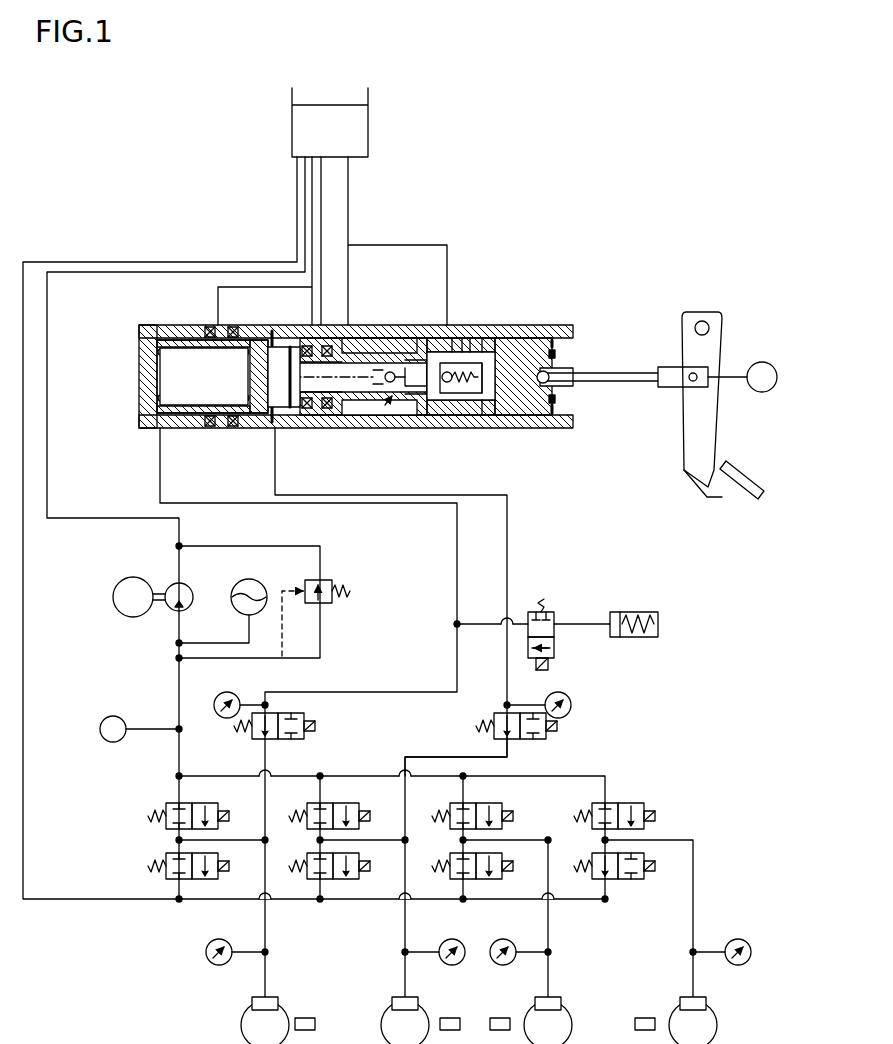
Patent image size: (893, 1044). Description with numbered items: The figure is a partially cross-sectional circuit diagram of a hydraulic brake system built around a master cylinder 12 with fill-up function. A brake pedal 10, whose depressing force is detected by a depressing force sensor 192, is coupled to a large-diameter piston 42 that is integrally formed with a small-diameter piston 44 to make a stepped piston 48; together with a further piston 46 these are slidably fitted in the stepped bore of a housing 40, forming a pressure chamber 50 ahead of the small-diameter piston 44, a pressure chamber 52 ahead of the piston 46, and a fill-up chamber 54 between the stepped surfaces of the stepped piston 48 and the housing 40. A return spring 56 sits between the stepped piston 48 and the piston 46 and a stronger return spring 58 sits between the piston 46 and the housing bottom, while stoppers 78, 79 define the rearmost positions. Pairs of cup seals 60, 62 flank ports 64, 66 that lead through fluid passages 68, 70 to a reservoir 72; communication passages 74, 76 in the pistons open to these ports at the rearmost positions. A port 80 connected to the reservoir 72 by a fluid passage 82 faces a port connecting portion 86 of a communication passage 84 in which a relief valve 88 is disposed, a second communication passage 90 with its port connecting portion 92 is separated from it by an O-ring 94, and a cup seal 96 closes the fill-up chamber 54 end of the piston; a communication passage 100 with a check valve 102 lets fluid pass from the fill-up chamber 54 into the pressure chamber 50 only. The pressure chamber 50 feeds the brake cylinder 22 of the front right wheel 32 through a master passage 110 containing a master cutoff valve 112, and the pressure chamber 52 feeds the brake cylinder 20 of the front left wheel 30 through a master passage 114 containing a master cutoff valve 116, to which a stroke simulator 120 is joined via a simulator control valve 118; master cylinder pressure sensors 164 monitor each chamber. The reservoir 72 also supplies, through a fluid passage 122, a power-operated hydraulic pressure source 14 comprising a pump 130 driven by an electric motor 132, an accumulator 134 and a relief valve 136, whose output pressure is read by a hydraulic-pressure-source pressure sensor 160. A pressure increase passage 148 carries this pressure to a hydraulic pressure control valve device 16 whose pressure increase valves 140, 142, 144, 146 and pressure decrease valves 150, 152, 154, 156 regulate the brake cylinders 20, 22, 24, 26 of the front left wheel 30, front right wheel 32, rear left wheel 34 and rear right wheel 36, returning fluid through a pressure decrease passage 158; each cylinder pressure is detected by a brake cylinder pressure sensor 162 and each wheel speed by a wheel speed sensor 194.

The brake pedal 10 is at (723, 345).
The master cylinder 12 is at (552, 230).
The power-operated hydraulic pressure source 14 is at (170, 656).
The hydraulic pressure control valve device 16 is at (638, 772).
The brake cylinder 20 is at (258, 997).
The brake cylinder 22 is at (400, 997).
The brake cylinder 24 is at (554, 998).
The brake cylinder 26 is at (699, 998).
The front left wheel 30 is at (222, 1008).
The front right wheel 32 is at (372, 1008).
The rear left wheel 34 is at (582, 1006).
The rear right wheel 36 is at (728, 1006).
The housing 40 is at (560, 428).
The large-diameter piston 42 is at (552, 396).
The small-diameter piston 44 is at (480, 396).
The piston 46 is at (206, 333).
The stepped piston 48 is at (388, 416).
The pressure chamber 50 is at (300, 417).
The pressure chamber 52 is at (152, 408).
The fill-up chamber 54 is at (366, 334).
The return spring 56 is at (291, 410).
The return spring 58 is at (160, 384).
The cup seal 60 is at (302, 345).
The cup seal 62 is at (233, 428).
The port 64 is at (322, 345).
The port 66 is at (230, 326).
The fluid passage 68 is at (321, 234).
The fluid passage 70 is at (218, 292).
The reservoir 72 is at (368, 130).
The communication passage 74 is at (342, 413).
The communication passage 76 is at (222, 356).
The stopper 78 is at (557, 404).
The stopper 79 is at (270, 422).
The port 80 is at (456, 336).
The fluid passage 82 is at (436, 250).
The communication passage 84 is at (549, 370).
The port connecting portion 86 is at (428, 336).
The relief valve 88 is at (458, 388).
The communication passage 90 is at (530, 410).
The port connecting portion 92 is at (485, 336).
The O-ring 94 is at (472, 336).
The cup seal 96 is at (404, 336).
The communication passage 100 is at (390, 334).
The check valve 102 is at (342, 322).
The master passage 110 is at (507, 513).
The master cutoff valve 112 is at (503, 742).
The master passage 114 is at (457, 536).
The master cutoff valve 116 is at (286, 719).
The simulator control valve 118 is at (556, 634).
The stroke simulator 120 is at (654, 612).
The fluid passage 122 is at (47, 462).
The pump 130 is at (193, 601).
The electric motor 132 is at (118, 585).
The accumulator 134 is at (246, 581).
The relief valve 136 is at (322, 604).
The pressure increase valve 140 is at (170, 803).
The pressure increase valve 142 is at (328, 805).
The pressure increase valve 144 is at (470, 805).
The pressure increase valve 146 is at (612, 805).
The pressure increase passage 148 is at (179, 767).
The pressure decrease valve 150 is at (170, 877).
The pressure decrease valve 152 is at (312, 877).
The pressure decrease valve 154 is at (455, 877).
The pressure decrease valve 156 is at (597, 877).
The pressure decrease passage 158 is at (23, 821).
The hydraulic-pressure-source pressure sensor 160 is at (106, 740).
The brake cylinder pressure sensor 162 is at (209, 944).
The master cylinder pressure sensor 164 is at (222, 718).
The depressing force sensor 192 is at (766, 392).
The wheel speed sensor 194 is at (305, 1016).